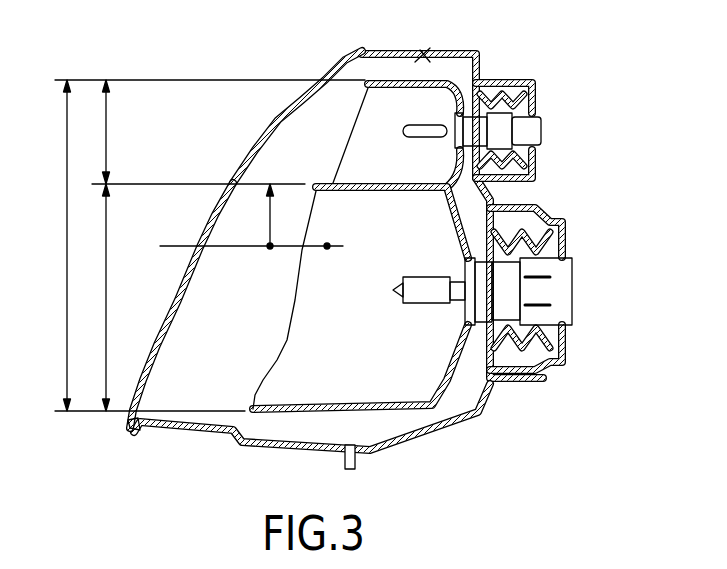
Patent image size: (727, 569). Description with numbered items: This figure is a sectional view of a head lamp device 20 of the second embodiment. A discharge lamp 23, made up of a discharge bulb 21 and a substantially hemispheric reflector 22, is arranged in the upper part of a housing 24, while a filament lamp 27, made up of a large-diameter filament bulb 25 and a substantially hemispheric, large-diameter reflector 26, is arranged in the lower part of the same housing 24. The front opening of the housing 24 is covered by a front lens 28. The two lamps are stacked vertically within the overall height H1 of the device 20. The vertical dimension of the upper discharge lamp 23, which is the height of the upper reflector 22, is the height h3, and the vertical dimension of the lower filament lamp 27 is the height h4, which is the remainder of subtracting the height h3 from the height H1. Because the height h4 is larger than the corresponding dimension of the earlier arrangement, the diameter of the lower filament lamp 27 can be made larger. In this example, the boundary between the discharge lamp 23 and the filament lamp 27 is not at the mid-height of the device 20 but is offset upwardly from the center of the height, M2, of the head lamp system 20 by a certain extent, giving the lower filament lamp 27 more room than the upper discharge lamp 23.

The head lamp device 20 is at (244, 56).
The discharge bulb 21 is at (425, 128).
The reflector 22 is at (394, 86).
The discharge lamp 23 is at (322, 137).
The housing 24 is at (480, 420).
The filament bulb 25 is at (420, 305).
The reflector 26 is at (348, 404).
The filament lamp 27 is at (260, 333).
The front lens 28 is at (204, 212).
The height H1 is at (196, 245).
The height h3 is at (198, 132).
The height h4 is at (122, 297).
The center of the height M2 is at (330, 252).